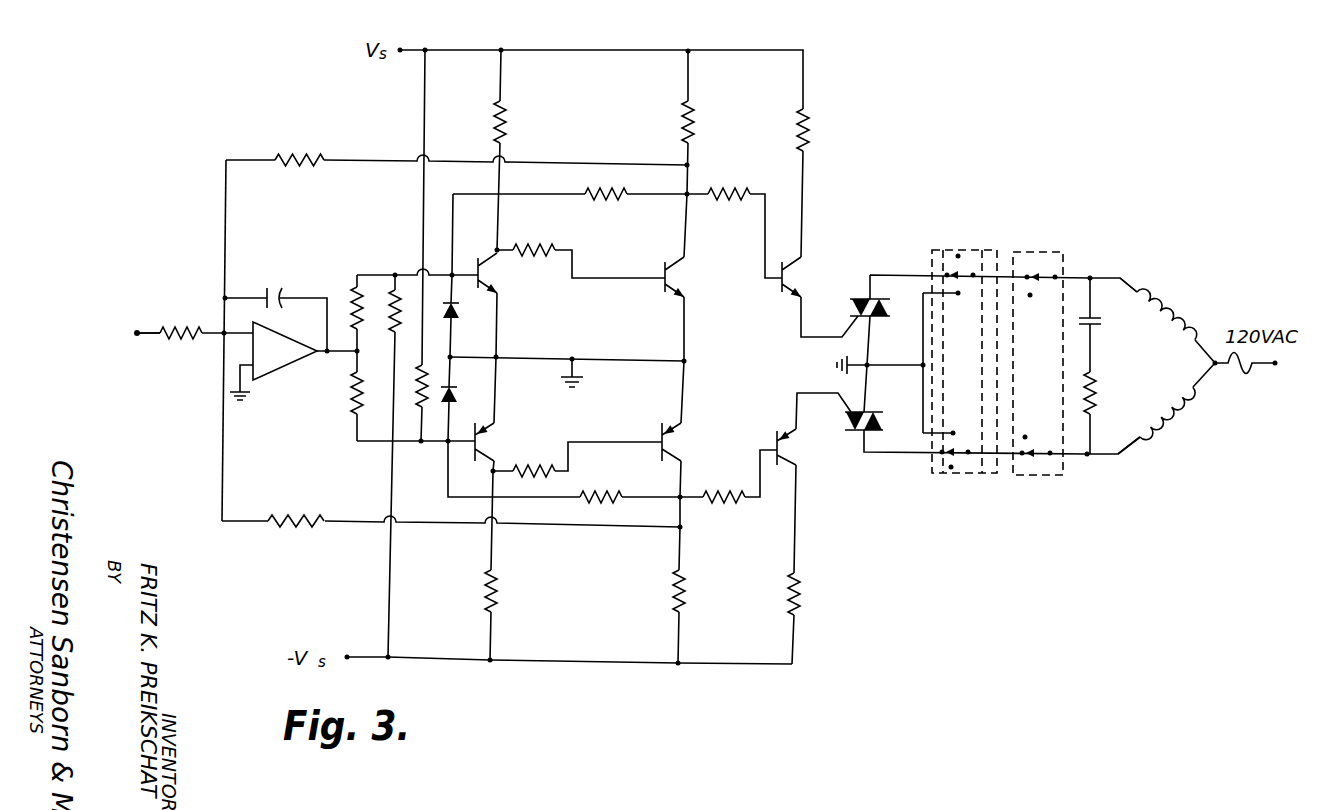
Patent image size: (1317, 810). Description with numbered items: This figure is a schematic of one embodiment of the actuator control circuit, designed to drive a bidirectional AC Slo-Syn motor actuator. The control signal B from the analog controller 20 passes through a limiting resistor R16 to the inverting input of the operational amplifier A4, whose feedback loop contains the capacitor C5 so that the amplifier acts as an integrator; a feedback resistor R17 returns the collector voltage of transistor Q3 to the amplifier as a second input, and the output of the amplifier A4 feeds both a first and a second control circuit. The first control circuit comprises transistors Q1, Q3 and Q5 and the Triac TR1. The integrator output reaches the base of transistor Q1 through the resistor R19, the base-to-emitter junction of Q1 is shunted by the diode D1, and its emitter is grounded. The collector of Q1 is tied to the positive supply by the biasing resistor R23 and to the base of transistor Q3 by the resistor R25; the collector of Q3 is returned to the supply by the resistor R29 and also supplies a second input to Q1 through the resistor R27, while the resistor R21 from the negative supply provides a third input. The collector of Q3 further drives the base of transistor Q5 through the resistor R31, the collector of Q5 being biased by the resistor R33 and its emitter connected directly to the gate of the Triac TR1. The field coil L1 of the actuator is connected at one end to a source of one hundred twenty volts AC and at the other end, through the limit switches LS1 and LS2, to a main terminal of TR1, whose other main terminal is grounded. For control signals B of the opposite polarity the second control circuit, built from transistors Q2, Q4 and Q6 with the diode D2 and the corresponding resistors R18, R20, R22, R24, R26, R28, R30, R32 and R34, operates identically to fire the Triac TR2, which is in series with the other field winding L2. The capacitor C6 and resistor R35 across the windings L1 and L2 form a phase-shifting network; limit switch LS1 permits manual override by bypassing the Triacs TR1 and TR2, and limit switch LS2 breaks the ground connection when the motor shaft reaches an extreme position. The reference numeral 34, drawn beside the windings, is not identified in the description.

The analog controller 20 is at (100, 340).
The control signal B is at (142, 318).
The limiting resistor R16 is at (182, 317).
The feedback resistor R17 is at (300, 146).
The resistor R18 is at (296, 508).
The resistor R19 is at (345, 302).
The resistor R20 is at (340, 393).
The resistor R21 is at (386, 313).
The resistor R22 is at (412, 386).
The biasing resistor R23 is at (522, 122).
The resistor R24 is at (514, 591).
The resistor R25 is at (538, 237).
The resistor R26 is at (540, 462).
The resistor R27 is at (611, 185).
The resistor R28 is at (606, 485).
The resistor R29 is at (712, 122).
The resistor R30 is at (702, 591).
The resistor R31 is at (733, 184).
The resistor R32 is at (727, 484).
The biasing resistor R33 is at (825, 130).
The resistor R34 is at (816, 594).
The resistor R35 is at (1112, 393).
The capacitor C5 is at (278, 284).
The capacitor C6 is at (1104, 328).
The operational amplifier A4 is at (273, 361).
The diode D1 is at (465, 318).
The diode D2 is at (465, 385).
The transistor Q1 is at (500, 273).
The transistor Q2 is at (498, 442).
The transistor Q3 is at (688, 277).
The transistor Q4 is at (686, 442).
The transistor Q5 is at (803, 277).
The transistor Q6 is at (798, 448).
The Triac TR1 is at (882, 298).
The Triac TR2 is at (880, 432).
The limit switch LS1 is at (964, 378).
The limit switch LS2 is at (1038, 379).
The field coil L1 is at (1168, 313).
The field winding L2 is at (1169, 419).
The motor 34 is at (1262, 453).